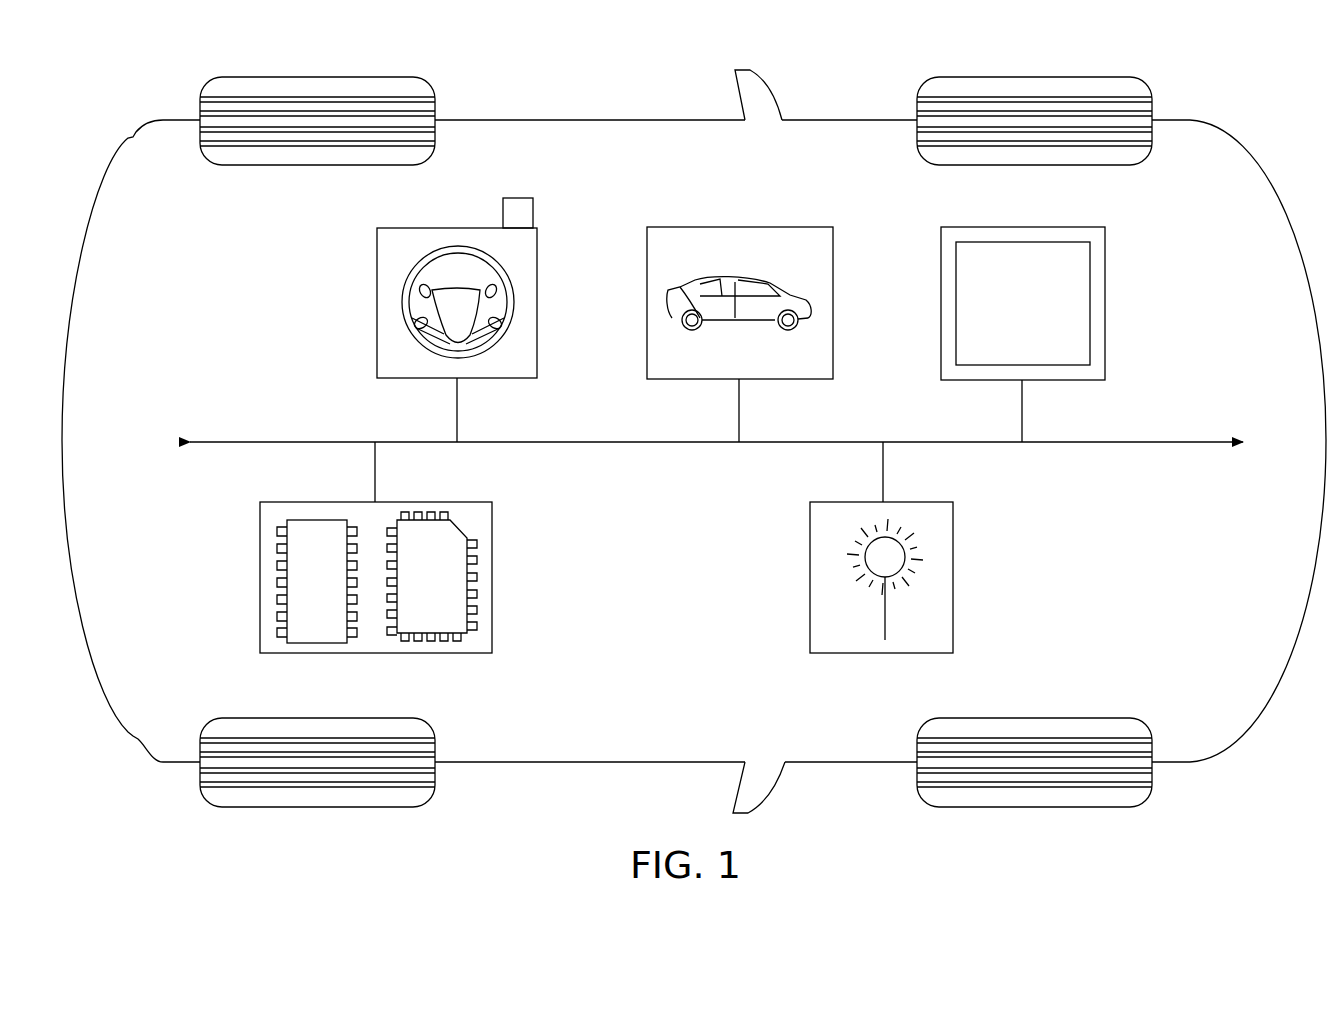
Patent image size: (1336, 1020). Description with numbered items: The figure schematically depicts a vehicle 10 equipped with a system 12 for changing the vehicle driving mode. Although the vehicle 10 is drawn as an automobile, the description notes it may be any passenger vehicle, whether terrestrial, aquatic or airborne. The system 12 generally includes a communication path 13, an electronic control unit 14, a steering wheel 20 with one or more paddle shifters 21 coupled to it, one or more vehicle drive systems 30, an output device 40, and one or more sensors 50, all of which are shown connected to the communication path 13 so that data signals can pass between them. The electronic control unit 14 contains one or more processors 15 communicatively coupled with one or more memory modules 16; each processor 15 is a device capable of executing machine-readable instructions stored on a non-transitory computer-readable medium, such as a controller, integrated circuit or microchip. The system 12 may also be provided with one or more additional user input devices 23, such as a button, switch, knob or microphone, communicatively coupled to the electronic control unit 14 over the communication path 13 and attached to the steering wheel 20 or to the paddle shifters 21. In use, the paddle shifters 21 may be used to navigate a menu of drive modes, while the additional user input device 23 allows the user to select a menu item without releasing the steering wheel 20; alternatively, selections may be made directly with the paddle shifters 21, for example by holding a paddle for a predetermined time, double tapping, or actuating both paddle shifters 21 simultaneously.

The vehicle 10 is at (1258, 132).
The system 12 is at (1250, 246).
The communication path 13 is at (214, 441).
The electronic control unit 14 is at (377, 607).
The processor 15 is at (309, 644).
The memory module 16 is at (463, 637).
The steering wheel 20 is at (439, 275).
The paddle shifter 21 is at (418, 292).
The additional user input device 23 is at (520, 197).
The vehicle drive system 30 is at (740, 226).
The output device 40 is at (1022, 226).
The sensor 50 is at (889, 654).